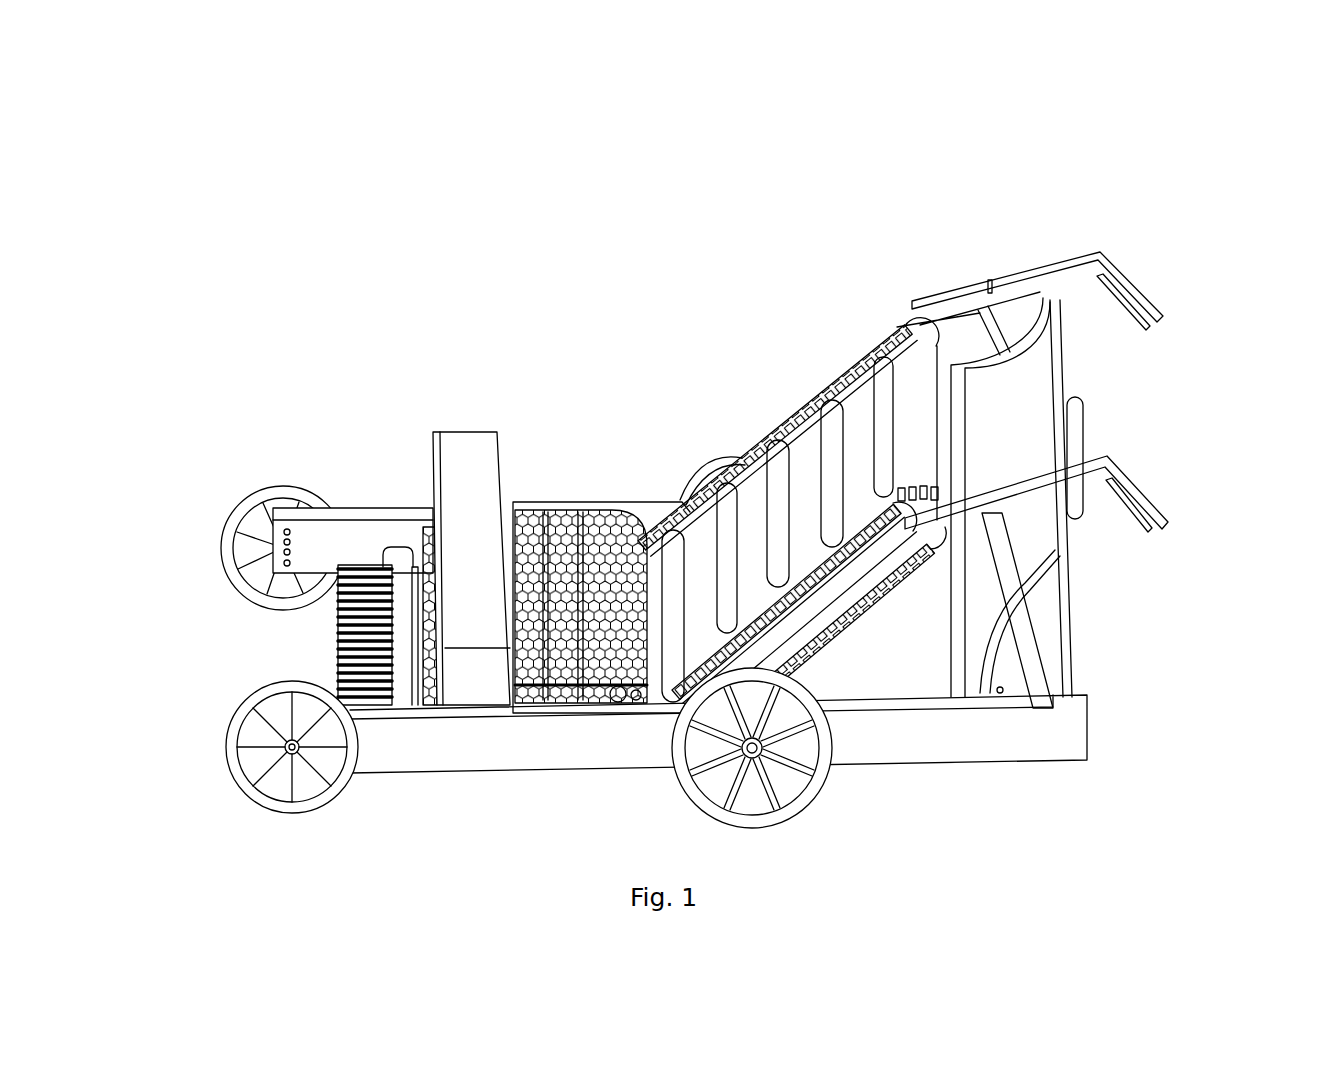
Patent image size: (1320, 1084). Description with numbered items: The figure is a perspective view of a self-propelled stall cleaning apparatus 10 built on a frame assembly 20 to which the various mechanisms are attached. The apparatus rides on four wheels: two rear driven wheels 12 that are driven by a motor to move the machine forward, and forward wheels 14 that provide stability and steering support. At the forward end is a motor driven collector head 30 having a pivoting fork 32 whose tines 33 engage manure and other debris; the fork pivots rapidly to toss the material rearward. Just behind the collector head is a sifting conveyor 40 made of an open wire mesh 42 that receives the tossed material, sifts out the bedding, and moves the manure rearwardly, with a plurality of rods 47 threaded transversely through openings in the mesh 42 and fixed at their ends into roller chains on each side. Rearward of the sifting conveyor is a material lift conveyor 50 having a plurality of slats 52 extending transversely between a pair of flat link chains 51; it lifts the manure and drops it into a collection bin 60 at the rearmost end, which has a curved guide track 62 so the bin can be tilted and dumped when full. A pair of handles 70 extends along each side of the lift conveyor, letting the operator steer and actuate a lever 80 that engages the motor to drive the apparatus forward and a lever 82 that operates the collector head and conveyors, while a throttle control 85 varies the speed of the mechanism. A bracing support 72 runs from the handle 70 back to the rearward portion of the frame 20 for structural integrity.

The stall cleaning apparatus 10 is at (798, 221).
The rear driven wheels 12 is at (800, 812).
The forward wheels 14 is at (238, 718).
The frame assembly 20 is at (357, 516).
The collector head 30 is at (392, 577).
The pivoting fork 32 is at (305, 708).
The tines 33 is at (367, 670).
The sifting conveyor 40 is at (601, 501).
The open wire mesh 42 is at (553, 520).
The rods 47 is at (580, 695).
The material lift conveyor 50 is at (845, 463).
The flat link chains 51 is at (765, 437).
The slats 52 is at (835, 424).
The collection bin 60 is at (1068, 603).
The guide track 62 is at (1000, 643).
The handles 70 is at (1073, 260).
The bracing support 72 is at (1002, 353).
The lever 80 is at (1148, 332).
The lever 82 is at (1150, 530).
The throttle control 85 is at (989, 280).